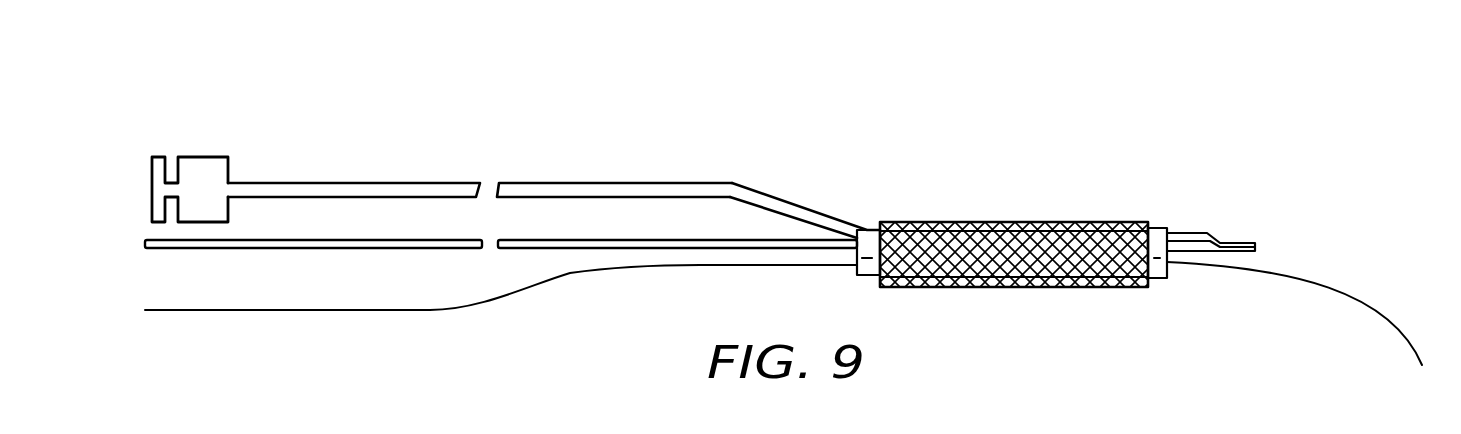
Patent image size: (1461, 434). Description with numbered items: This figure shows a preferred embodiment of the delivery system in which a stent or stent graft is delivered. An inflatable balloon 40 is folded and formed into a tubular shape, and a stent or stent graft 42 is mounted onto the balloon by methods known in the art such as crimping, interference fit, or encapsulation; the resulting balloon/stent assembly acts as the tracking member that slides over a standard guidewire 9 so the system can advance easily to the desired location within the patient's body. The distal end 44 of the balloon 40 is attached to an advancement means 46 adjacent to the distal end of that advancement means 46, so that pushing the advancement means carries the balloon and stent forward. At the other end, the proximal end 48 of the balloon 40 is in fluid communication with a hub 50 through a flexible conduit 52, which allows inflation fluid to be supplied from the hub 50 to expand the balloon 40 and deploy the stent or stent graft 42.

The guidewire 9 is at (1332, 283).
The inflatable balloon 40 is at (1018, 238).
The stent or stent graft 42 is at (1050, 287).
The distal end of balloon 44 is at (1160, 228).
The advancement means 46 is at (393, 250).
The proximal end of balloon 48 is at (789, 205).
The hub 50 is at (212, 170).
The flexible conduit 52 is at (406, 182).